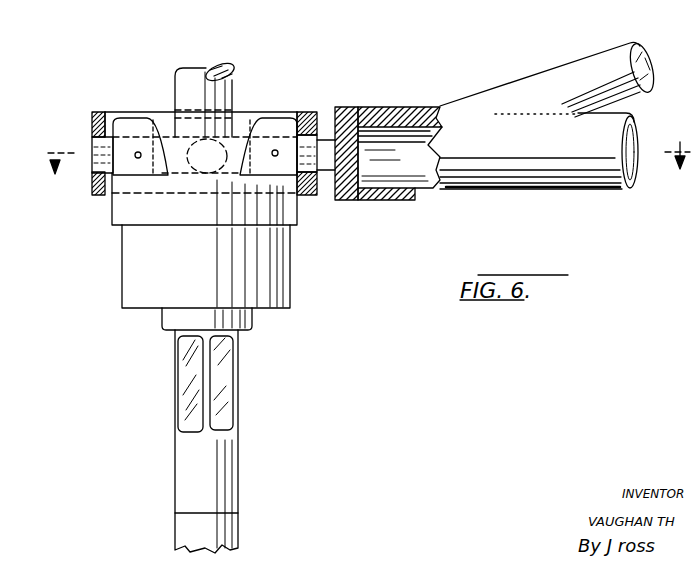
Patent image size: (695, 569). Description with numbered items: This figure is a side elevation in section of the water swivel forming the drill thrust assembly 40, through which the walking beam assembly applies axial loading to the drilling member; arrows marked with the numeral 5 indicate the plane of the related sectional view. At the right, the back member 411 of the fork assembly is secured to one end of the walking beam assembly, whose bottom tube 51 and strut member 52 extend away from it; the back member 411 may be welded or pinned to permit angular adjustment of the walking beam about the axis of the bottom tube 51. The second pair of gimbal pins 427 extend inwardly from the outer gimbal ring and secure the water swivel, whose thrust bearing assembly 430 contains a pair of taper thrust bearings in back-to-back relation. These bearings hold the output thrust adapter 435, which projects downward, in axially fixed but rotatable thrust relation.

The section line 5— 5 is at (369, 147).
The drill thrust assembly 40 is at (141, 92).
The second pair of gimbal pins 427 is at (91, 146).
The back member 411 is at (339, 107).
The strut member 52 is at (540, 75).
The bottom tube 51 is at (525, 188).
The thrust bearing assembly 430 is at (294, 283).
The output thrust adapter 435 is at (230, 378).